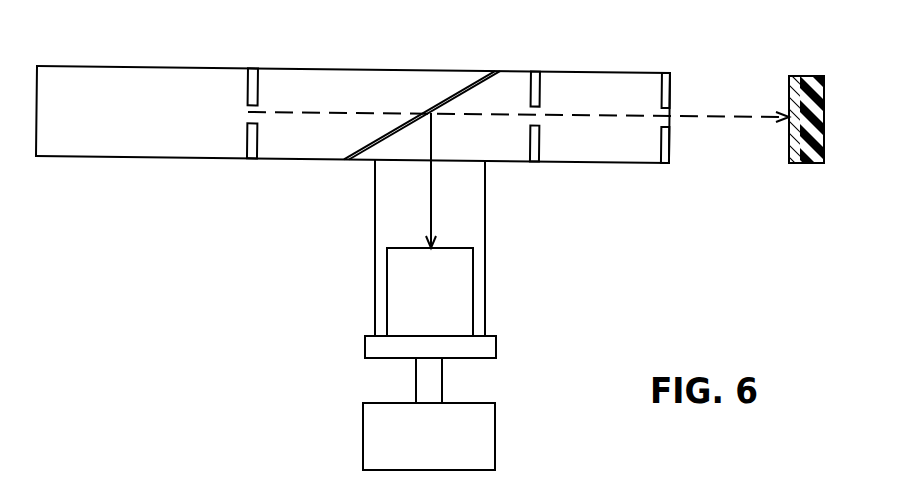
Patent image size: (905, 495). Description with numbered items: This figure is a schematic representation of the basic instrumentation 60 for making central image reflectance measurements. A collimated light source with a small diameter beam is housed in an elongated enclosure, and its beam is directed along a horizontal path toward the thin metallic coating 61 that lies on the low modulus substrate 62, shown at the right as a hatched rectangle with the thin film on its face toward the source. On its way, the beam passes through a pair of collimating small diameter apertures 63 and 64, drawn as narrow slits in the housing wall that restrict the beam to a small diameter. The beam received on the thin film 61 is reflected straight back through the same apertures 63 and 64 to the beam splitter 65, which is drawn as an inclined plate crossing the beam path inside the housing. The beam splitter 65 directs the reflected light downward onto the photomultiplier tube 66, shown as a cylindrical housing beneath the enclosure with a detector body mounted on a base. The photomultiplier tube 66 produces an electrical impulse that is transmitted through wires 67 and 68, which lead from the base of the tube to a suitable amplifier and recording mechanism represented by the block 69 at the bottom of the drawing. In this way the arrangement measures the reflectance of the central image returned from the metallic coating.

The basic instrumentation for central image reflectance measurements 60 is at (282, 190).
The thin metallic coating 61 is at (793, 76).
The low modulus substrate 62 is at (806, 164).
The collimating small diameter aperture 63 is at (670, 112).
The collimating small diameter aperture 64 is at (540, 106).
The beam splitter 65 is at (417, 112).
The photomultiplier tube 66 is at (387, 290).
The wire 67 is at (416, 383).
The wire 68 is at (442, 383).
The amplifier and recording mechanism 69 is at (417, 445).